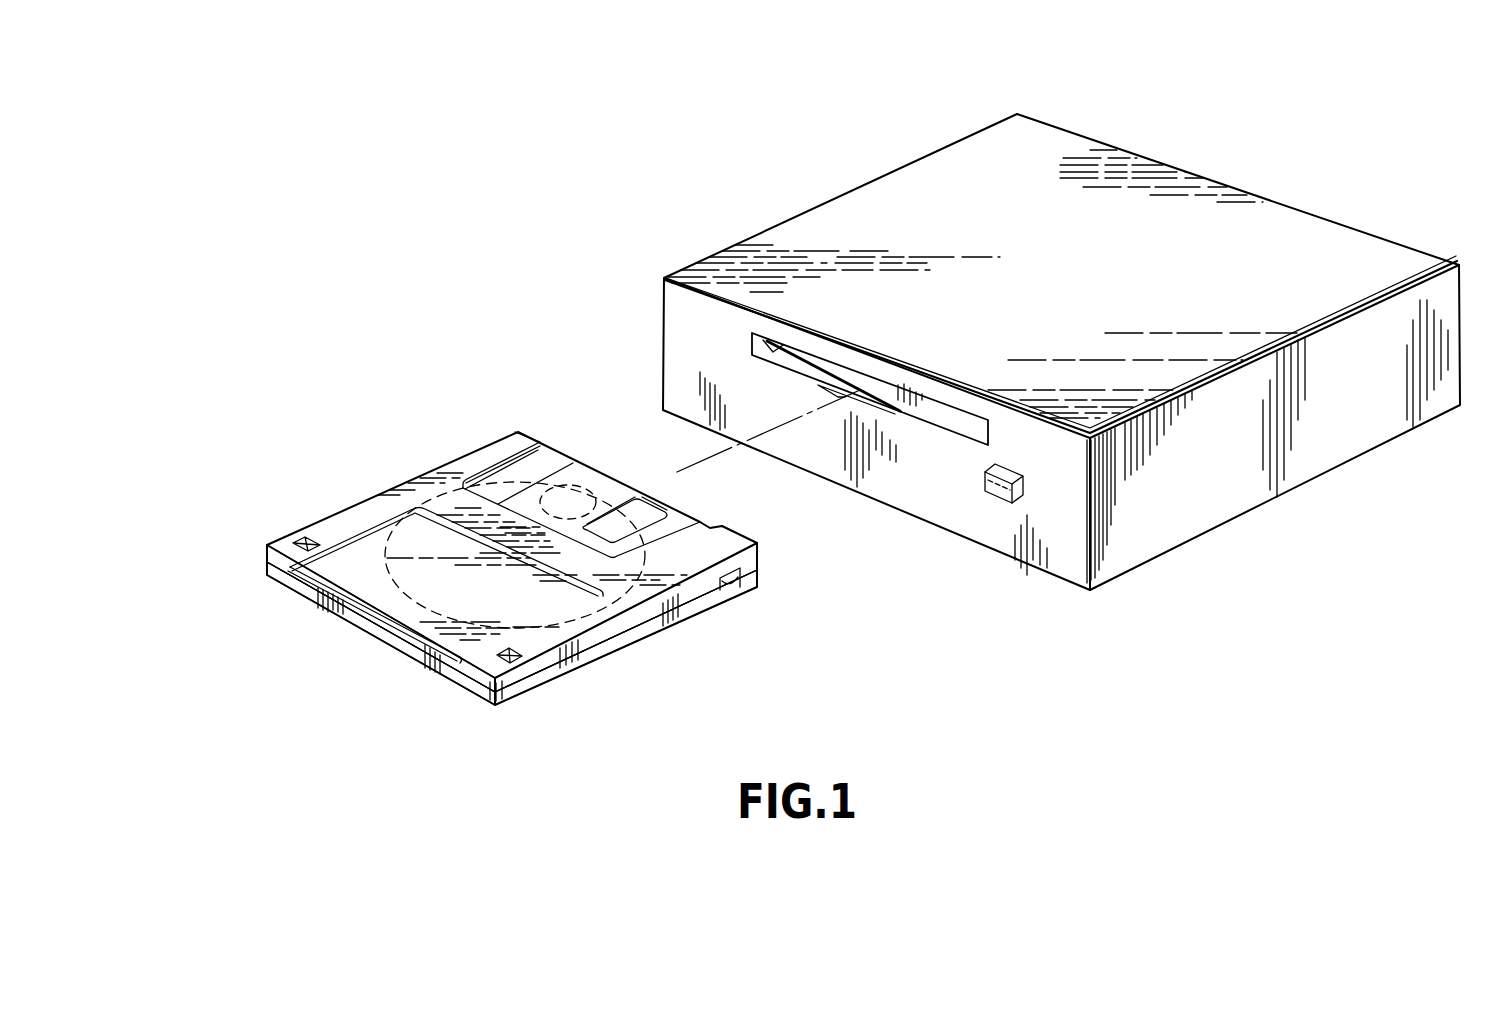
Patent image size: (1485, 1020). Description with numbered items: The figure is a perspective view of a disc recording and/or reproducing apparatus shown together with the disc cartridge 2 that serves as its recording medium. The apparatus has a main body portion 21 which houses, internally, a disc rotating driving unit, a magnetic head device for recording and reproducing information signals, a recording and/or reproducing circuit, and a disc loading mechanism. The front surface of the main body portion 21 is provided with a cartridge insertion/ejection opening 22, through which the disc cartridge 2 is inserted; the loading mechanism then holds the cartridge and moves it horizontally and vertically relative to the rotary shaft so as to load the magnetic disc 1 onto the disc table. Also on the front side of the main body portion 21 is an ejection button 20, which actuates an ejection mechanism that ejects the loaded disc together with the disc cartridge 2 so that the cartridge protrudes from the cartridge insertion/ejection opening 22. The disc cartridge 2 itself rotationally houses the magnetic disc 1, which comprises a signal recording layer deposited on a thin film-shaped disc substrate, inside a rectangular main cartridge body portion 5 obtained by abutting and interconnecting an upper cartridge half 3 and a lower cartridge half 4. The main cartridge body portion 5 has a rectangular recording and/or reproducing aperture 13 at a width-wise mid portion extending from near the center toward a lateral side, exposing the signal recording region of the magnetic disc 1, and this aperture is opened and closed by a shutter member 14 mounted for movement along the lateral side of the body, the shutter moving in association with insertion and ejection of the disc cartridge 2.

The magnetic disc 1 is at (433, 590).
The disc cartridge 2 is at (355, 510).
The upper cartridge half 3 is at (267, 557).
The lower cartridge half 4 is at (267, 570).
The main cartridge body portion 5 is at (184, 525).
The recording and/or reproducing aperture 13 is at (610, 487).
The shutter member 14 is at (577, 470).
The ejection button 20 is at (1002, 490).
The main body portion 21 is at (868, 212).
The cartridge insertion/ejection opening 22 is at (756, 348).